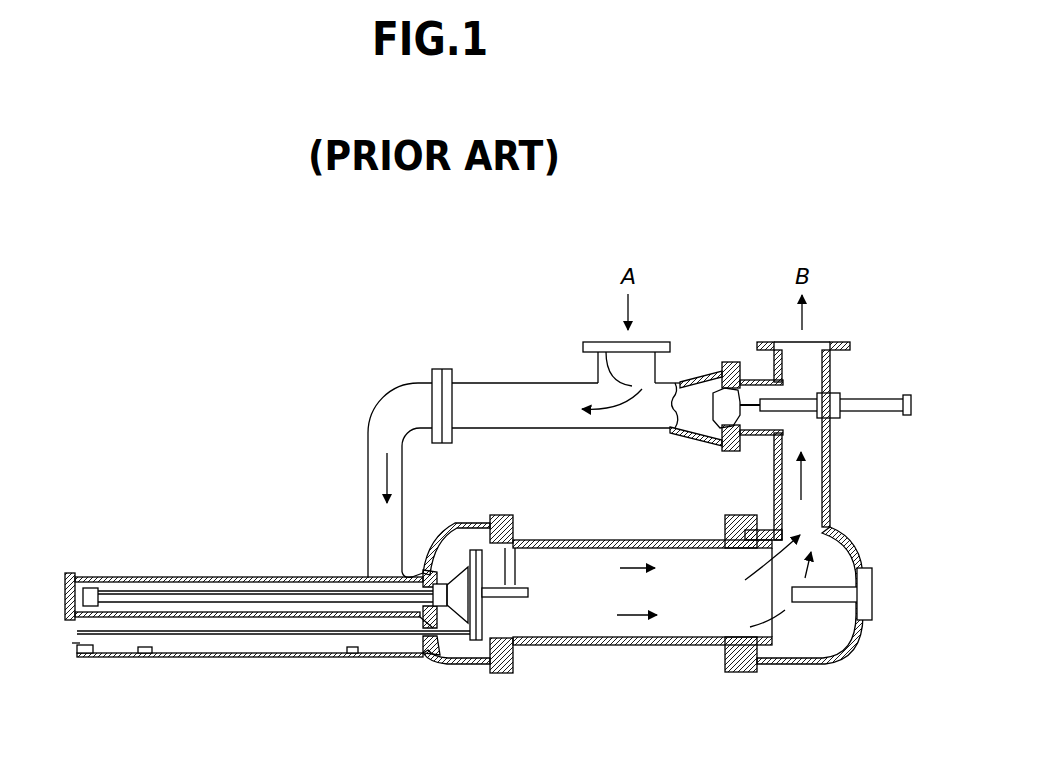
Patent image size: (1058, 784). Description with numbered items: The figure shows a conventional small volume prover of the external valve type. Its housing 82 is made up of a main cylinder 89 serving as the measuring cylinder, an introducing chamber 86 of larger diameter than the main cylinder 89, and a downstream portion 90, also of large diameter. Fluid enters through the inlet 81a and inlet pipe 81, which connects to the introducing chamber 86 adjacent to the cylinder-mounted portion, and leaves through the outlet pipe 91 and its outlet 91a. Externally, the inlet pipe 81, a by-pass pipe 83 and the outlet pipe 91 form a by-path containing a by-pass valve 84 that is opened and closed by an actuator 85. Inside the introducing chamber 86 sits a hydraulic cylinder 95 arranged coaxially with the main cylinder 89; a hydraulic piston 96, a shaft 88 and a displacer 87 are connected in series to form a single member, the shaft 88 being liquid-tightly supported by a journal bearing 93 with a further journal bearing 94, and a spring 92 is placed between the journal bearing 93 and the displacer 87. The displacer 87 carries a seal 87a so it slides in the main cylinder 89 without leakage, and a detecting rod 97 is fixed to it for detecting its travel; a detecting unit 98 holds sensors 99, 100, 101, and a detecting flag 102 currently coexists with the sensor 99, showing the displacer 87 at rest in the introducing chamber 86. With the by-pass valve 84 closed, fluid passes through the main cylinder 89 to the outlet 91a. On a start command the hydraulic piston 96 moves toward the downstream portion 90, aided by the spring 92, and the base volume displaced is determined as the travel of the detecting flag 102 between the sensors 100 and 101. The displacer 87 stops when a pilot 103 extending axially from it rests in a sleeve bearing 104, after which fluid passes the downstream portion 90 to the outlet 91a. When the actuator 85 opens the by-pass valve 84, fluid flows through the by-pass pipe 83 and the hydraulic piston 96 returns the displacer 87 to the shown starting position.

The inlet pipe 81 is at (383, 437).
The inlet 81a is at (620, 343).
The housing 82 is at (642, 660).
The by-pass pipe 83 is at (707, 375).
The by-pass valve 84 is at (725, 413).
The actuator 85 is at (896, 412).
The introducing chamber 86 is at (470, 670).
The displacer 87 is at (478, 548).
The seal 87a is at (484, 606).
The shaft 88 is at (172, 600).
The main cylinder 89 is at (680, 648).
The downstream portion 90 is at (830, 665).
The outlet pipe 91 is at (831, 483).
The outlet 91a is at (812, 350).
The spring 92 is at (451, 525).
The journal bearing 93 is at (420, 565).
The journal bearing 94 is at (437, 640).
The hydraulic cylinder 95 is at (288, 577).
The hydraulic piston 96 is at (88, 577).
The detecting rod 97 is at (243, 636).
The detecting unit 98 is at (190, 657).
The sensor 99 is at (90, 655).
The sensor 100 is at (145, 655).
The sensor 101 is at (352, 658).
The detecting flag 102 is at (74, 645).
The pilot 103 is at (529, 583).
The sleeve bearing 104 is at (813, 602).